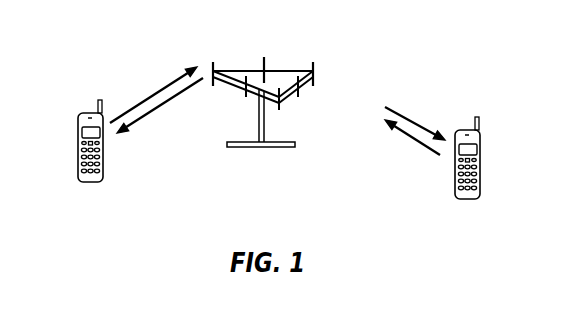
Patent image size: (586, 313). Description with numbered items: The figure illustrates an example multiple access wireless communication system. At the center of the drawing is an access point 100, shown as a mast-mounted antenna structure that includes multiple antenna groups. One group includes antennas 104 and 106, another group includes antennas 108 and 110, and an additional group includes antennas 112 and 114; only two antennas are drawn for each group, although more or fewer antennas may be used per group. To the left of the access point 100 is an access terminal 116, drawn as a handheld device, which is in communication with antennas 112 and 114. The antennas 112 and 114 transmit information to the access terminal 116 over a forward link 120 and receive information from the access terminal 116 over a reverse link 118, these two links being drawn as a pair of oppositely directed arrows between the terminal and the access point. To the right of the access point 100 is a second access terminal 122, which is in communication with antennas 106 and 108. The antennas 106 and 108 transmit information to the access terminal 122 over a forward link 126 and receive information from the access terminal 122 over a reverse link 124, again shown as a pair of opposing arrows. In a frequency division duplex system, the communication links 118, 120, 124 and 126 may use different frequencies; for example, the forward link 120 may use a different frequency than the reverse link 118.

The access point 100 is at (278, 110).
The antenna 104 is at (280, 108).
The antenna 106 is at (299, 92).
The antenna 108 is at (314, 75).
The antenna 110 is at (265, 58).
The antenna 112 is at (212, 64).
The antenna 114 is at (246, 96).
The access terminal 116 is at (78, 126).
The reverse link 118 is at (160, 90).
The forward link 120 is at (153, 115).
The access terminal 122 is at (480, 150).
The reverse link 124 is at (420, 142).
The forward link 126 is at (412, 120).